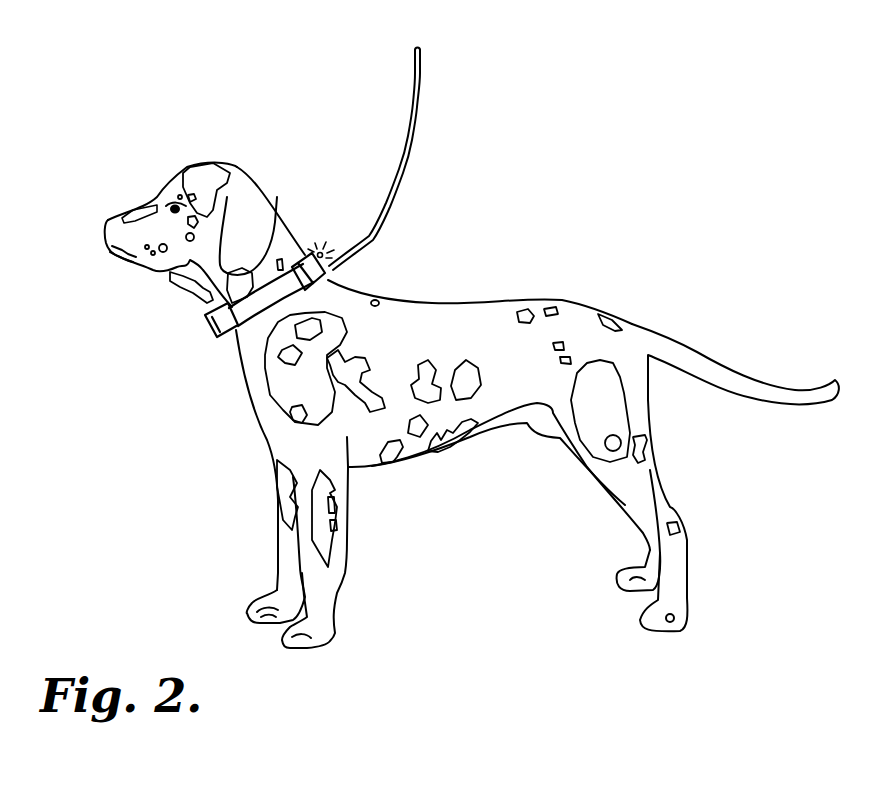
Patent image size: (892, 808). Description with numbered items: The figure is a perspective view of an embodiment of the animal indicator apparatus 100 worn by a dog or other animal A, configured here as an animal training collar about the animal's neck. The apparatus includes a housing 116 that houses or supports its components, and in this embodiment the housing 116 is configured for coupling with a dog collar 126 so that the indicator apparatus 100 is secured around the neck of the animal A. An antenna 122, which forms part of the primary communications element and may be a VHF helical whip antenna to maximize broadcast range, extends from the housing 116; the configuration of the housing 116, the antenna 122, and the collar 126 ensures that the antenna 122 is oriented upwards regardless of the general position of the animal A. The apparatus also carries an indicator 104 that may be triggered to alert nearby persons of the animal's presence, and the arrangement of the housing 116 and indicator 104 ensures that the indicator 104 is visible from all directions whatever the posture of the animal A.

The animal indicator apparatus 100 is at (303, 235).
The indicator 104 is at (335, 226).
The housing 116 is at (313, 271).
The antenna 122 is at (383, 205).
The dog collar 126 is at (237, 318).
The animal A is at (600, 280).